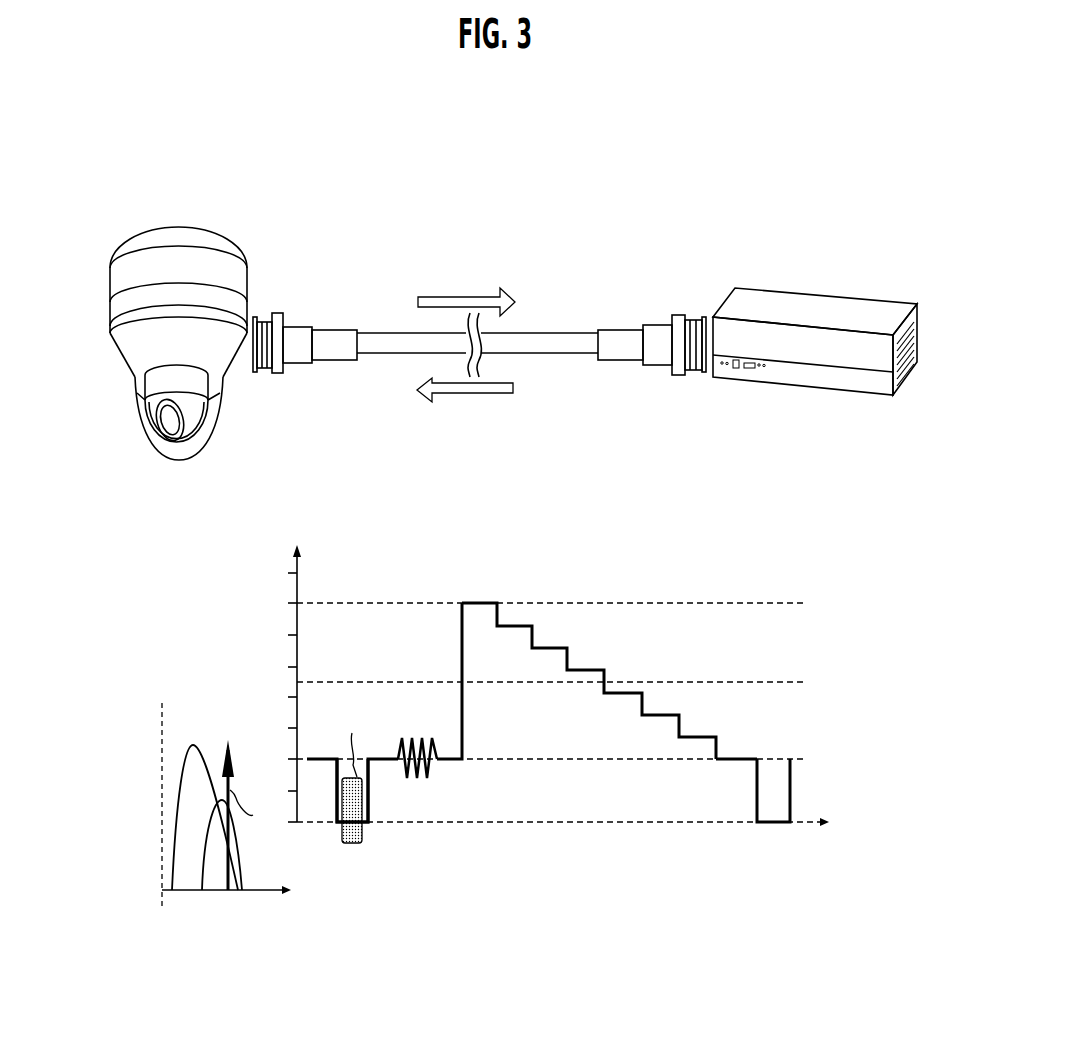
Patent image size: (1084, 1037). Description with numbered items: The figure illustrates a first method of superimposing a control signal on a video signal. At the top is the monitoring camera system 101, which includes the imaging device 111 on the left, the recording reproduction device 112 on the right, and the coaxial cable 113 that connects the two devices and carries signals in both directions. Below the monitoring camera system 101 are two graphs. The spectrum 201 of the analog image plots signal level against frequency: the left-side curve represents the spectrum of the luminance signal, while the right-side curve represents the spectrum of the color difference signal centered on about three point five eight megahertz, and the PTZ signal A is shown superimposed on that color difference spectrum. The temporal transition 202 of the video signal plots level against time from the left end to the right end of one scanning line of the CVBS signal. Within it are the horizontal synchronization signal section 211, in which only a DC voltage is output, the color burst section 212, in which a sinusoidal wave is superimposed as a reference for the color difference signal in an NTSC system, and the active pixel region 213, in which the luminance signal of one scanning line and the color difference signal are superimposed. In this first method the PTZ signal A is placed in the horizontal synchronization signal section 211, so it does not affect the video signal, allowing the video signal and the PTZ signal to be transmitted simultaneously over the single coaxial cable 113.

The monitoring camera system 101 is at (710, 173).
The imaging device 111 is at (178, 227).
The recording reproduction device 112 is at (823, 293).
The coaxial cable 113 is at (563, 333).
The spectrum of analog image 201 is at (143, 933).
The temporal transition of video signal 202 is at (715, 555).
The horizontal synchronization signal section 211 is at (367, 823).
The color burst section 212 is at (440, 735).
The active pixel region 213 is at (717, 592).